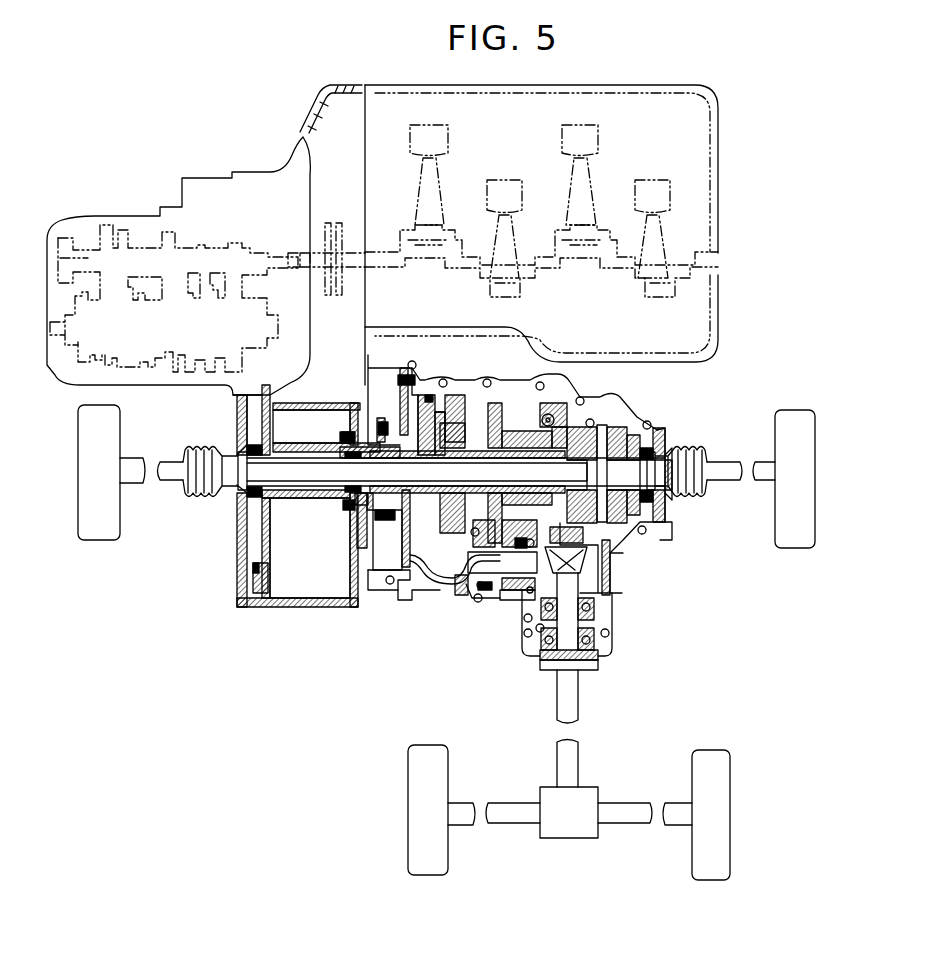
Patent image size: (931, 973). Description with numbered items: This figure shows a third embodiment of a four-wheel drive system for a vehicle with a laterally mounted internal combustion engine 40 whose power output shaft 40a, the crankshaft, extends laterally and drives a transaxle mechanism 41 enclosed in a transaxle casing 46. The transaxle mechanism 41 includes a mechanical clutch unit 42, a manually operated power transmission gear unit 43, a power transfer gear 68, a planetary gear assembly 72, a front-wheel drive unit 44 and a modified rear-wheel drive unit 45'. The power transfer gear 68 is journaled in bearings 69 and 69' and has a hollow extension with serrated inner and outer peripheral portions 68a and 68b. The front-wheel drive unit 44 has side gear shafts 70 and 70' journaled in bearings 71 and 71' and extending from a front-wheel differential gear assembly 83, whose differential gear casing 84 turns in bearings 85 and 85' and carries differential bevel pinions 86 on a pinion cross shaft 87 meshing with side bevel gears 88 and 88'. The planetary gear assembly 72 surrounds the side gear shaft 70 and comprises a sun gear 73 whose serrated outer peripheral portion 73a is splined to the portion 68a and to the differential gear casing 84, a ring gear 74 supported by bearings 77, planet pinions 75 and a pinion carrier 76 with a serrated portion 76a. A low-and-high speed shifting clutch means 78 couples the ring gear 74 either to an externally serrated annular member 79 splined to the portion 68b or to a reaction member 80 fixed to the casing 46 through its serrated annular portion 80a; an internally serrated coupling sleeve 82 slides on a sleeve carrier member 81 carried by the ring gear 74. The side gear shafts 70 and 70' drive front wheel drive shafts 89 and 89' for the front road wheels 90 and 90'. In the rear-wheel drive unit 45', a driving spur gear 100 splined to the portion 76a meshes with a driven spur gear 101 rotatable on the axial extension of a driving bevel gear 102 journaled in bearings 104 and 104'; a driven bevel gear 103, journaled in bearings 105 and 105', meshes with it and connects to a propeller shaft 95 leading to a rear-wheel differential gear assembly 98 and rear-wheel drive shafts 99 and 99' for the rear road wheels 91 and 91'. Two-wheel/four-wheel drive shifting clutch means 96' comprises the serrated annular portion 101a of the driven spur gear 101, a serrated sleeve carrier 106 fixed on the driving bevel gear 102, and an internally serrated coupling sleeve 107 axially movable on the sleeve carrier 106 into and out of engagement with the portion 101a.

The internal combustion engine 40 is at (732, 283).
The power output shaft 40a is at (392, 270).
The transaxle mechanism 41 is at (225, 565).
The mechanical clutch unit 42 is at (330, 222).
The power transmission gear unit 43 is at (247, 243).
The front-wheel drive unit 44 is at (703, 546).
The rear-wheel drive unit 45' is at (664, 591).
The transaxle casing 46 is at (318, 118).
The power transfer gear 68 is at (262, 605).
The serrated inner peripheral portion 68a is at (358, 458).
The serrated outer peripheral portion 68b is at (340, 438).
The bearing 69 is at (227, 494).
The bearing 69' is at (301, 512).
The side gear shaft 70 is at (306, 544).
The side gear shaft 70' is at (681, 521).
The bearing 71 is at (215, 453).
The bearing 71' is at (693, 462).
The planetary gear assembly 72 is at (436, 412).
The sun gear 73 is at (452, 458).
The serrated outer peripheral portion 73a is at (398, 460).
The ring gear 74 is at (452, 572).
The planet pinions 75 is at (452, 418).
The pinion carrier 76 is at (498, 400).
The externally serrated outer peripheral portion 76a is at (556, 442).
The bearings 77 is at (428, 584).
The low-and-high speed shifting clutch means 78 is at (378, 437).
The externally serrated annular member 79 is at (362, 520).
The reaction member 80 is at (400, 437).
The externally serrated annular portion 80a is at (390, 436).
The sleeve carrier member 81 is at (400, 522).
The coupling sleeve 82 is at (380, 525).
The front-wheel differential gear assembly 83 is at (613, 565).
The differential gear casing 84 is at (650, 522).
The bearing 85 is at (543, 422).
The bearing 85' is at (683, 465).
The differential bevel pinions 86 is at (586, 425).
The pinion cross shaft 87 is at (604, 428).
The differential side bevel gear 88 is at (582, 404).
The differential side bevel gear 88' is at (659, 411).
The front wheel drive shaft 89 is at (171, 489).
The front wheel drive shaft 89' is at (739, 455).
The front road wheel 90 is at (121, 479).
The front road wheel 90' is at (776, 479).
The rear road wheel 91 is at (441, 792).
The rear road wheel 91' is at (696, 794).
The propeller shaft 95 is at (580, 705).
The two-wheel/four-wheel drive shifting clutch means 96' is at (550, 669).
The rear-wheel differential gear assembly 98 is at (563, 838).
The rear-wheel drive shaft 99 is at (513, 793).
The rear-wheel drive shaft 99' is at (625, 791).
The driving spur gear 100 is at (513, 400).
The driven spur gear 101 is at (502, 556).
The externally serrated annular portion 101a is at (505, 596).
The driving bevel gear 102 is at (568, 552).
The driven bevel gear 103 is at (612, 588).
The bearing 104 is at (444, 600).
The bearing 104' is at (576, 539).
The bearing 105 is at (601, 615).
The bearing 105' is at (604, 640).
The sleeve carrier 106 is at (530, 540).
The coupling sleeve 107 is at (528, 618).